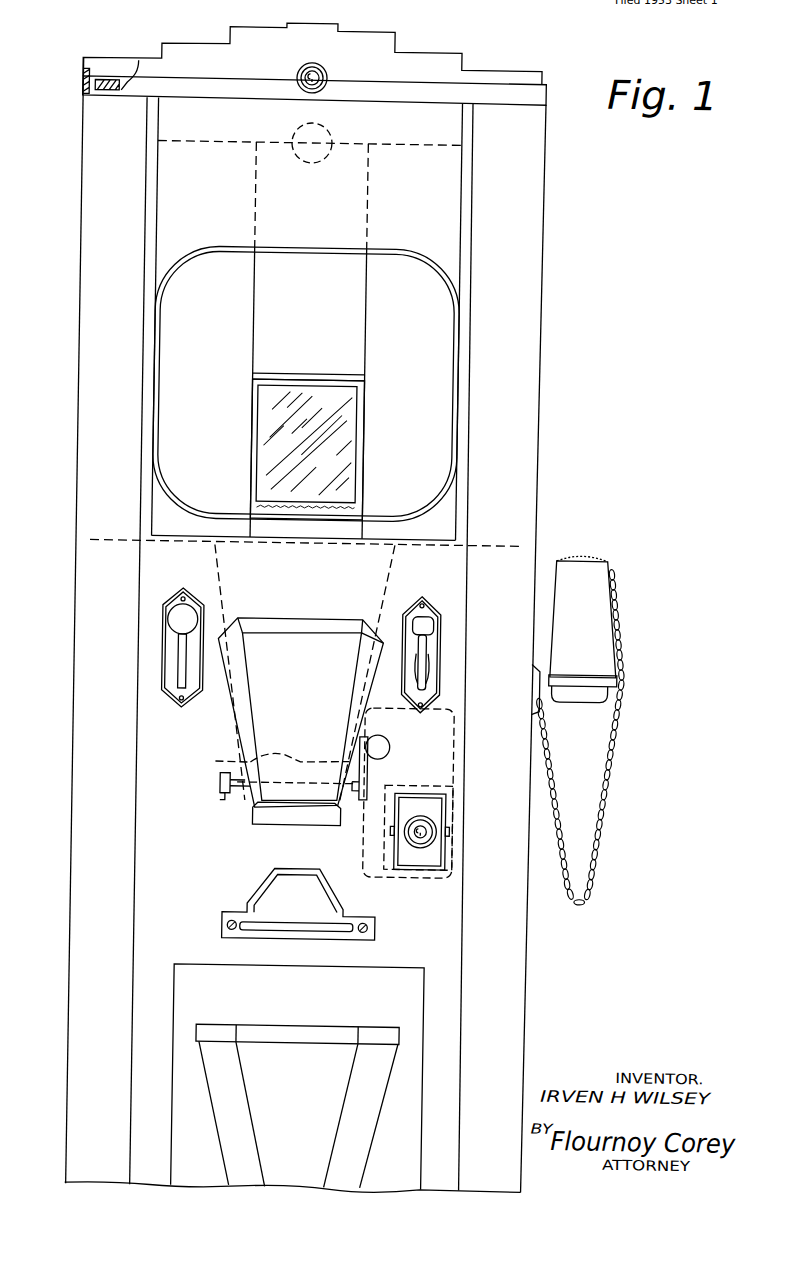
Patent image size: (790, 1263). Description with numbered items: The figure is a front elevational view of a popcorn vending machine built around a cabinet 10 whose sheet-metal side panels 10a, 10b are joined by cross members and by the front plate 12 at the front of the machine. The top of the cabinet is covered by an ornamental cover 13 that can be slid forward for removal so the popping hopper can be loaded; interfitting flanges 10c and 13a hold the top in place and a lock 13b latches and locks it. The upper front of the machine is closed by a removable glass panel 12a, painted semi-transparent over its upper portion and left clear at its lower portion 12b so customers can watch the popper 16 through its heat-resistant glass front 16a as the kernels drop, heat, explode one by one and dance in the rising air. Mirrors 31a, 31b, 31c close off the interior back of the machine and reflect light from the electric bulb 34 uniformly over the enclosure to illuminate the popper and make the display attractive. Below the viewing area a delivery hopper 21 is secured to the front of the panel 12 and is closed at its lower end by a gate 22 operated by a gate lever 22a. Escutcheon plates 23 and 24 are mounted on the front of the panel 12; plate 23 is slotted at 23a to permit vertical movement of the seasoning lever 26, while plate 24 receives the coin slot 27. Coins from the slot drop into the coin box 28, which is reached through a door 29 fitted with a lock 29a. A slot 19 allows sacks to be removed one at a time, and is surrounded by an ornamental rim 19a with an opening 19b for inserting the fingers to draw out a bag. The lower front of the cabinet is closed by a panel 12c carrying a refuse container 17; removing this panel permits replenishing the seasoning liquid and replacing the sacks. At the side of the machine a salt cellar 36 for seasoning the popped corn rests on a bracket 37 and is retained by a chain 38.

The cabinet 10 is at (303, 626).
The side panel 10a is at (534, 401).
The side panel 10b is at (76, 418).
The flange 10c is at (83, 95).
The front plate 12 is at (162, 833).
The glass panel 12a is at (430, 198).
The clear lower portion of glass panel 12b is at (421, 293).
The panel 12c is at (412, 1004).
The ornamental cover 13 is at (422, 61).
The flange 13a is at (76, 81).
The lock 13b is at (311, 75).
The popper 16 is at (356, 422).
The heat-resistant glass front 16a is at (344, 449).
The refuse container 17 is at (375, 1057).
The slot 19 is at (343, 927).
The ornamental rim 19a is at (286, 905).
The opening 19b is at (253, 901).
The delivery hopper 21 is at (283, 718).
The gate 22 is at (254, 763).
The gate lever 22a is at (389, 749).
The escutcheon plate 23 is at (176, 619).
The slot 23a is at (172, 667).
The escutcheon plate 24 is at (440, 603).
The seasoning lever 26 is at (182, 647).
The coin slot 27 is at (431, 650).
The coin box 28 is at (449, 758).
The door 29 is at (434, 805).
The lock 29a is at (441, 830).
The mirror 31a is at (219, 391).
The mirror 31b is at (309, 342).
The mirror 31c is at (393, 394).
The electric bulb 34 is at (327, 137).
The salt cellar 36 is at (582, 634).
The bracket 37 is at (575, 696).
The chain 38 is at (607, 865).